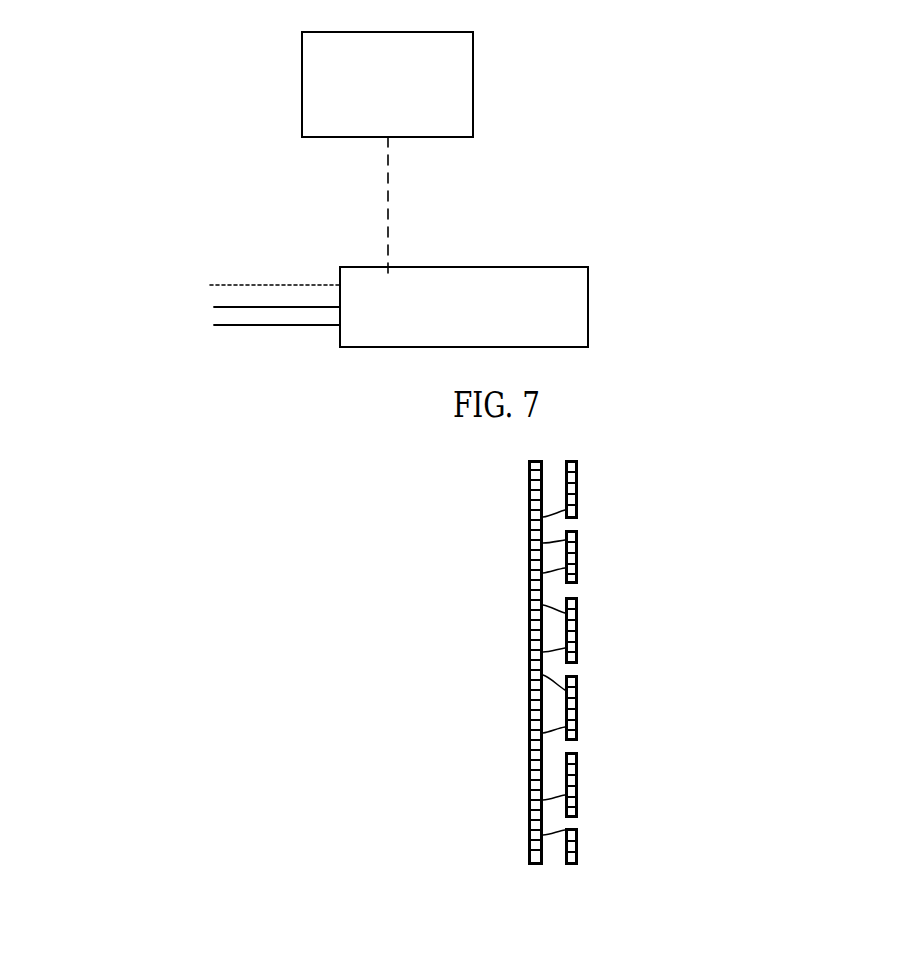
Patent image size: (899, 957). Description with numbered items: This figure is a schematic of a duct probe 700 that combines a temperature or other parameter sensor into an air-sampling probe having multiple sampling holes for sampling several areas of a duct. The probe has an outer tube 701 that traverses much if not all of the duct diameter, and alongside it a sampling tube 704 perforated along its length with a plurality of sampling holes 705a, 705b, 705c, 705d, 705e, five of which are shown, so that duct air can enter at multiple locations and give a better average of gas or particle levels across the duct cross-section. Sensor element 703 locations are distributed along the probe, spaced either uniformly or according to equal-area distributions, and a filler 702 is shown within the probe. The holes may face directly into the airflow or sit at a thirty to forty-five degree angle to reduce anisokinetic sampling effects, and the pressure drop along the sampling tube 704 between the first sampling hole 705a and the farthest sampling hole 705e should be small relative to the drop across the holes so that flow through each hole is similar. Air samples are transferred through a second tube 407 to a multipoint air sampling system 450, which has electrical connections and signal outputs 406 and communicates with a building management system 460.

The duct probe 700 is at (346, 232).
The building management system 460 is at (387, 84).
The multipoint air sampling system 450 is at (464, 307).
The multipoint air sampling system electrical connections and signal outputs 406 is at (340, 278).
The second tube 407 is at (340, 347).
The outer tube 701 is at (525, 650).
The filler 702 is at (525, 848).
The sensor element 703 is at (525, 573).
The sampling tube 704 is at (525, 718).
The sampling hole 705a is at (577, 523).
The sampling hole 705b is at (577, 590).
The sampling hole 705c is at (577, 668).
The sampling hole 705d is at (578, 745).
The sampling hole 705e is at (577, 820).